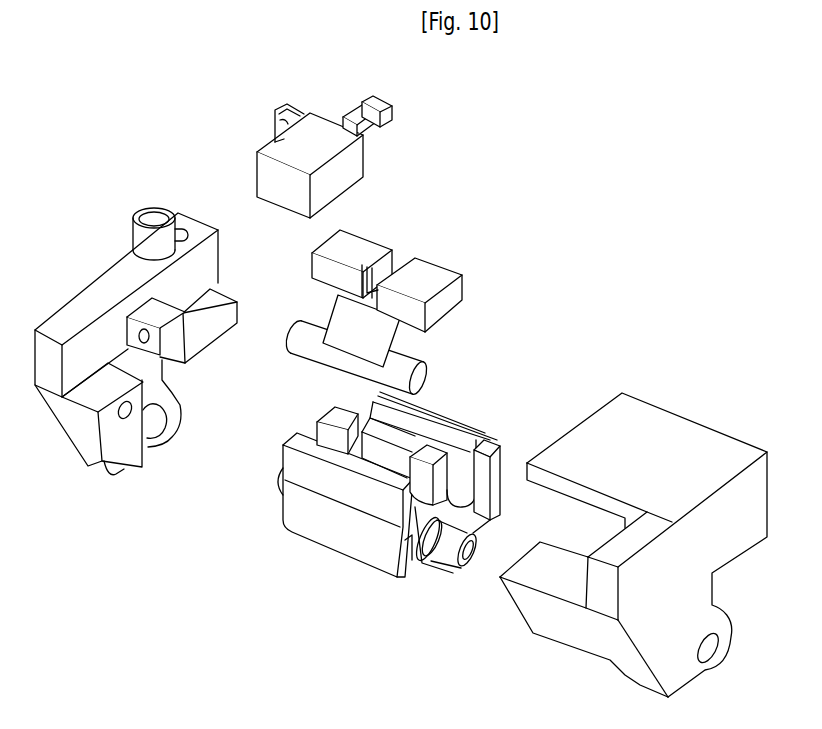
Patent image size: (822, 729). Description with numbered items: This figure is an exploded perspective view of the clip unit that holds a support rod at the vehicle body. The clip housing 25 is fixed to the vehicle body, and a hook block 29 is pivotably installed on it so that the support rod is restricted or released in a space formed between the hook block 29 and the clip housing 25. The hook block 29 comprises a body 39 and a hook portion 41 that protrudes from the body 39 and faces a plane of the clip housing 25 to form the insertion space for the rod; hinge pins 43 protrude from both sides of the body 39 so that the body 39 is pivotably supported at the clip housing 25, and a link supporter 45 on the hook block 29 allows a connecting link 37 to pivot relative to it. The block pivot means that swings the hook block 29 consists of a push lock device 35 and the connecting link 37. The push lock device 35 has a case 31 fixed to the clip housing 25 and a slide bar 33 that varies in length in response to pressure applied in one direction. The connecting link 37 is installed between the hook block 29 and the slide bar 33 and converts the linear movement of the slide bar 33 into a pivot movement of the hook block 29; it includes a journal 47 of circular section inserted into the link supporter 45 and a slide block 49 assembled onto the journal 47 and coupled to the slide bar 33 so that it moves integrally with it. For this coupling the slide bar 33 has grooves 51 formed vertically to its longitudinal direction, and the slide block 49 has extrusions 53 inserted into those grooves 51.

The clip housing 25 is at (90, 302).
The hook block 29 is at (333, 543).
The case 31 is at (345, 185).
The slide bar 33 is at (352, 110).
The push lock device 35 is at (271, 142).
The connecting link 37 is at (470, 315).
The body 39 is at (421, 572).
The hook portion 41 is at (476, 484).
The hinge pins 43 is at (475, 555).
The link supporter 45 is at (327, 433).
The journal 47 is at (308, 320).
The slide block 49 is at (312, 250).
The grooves 51 is at (388, 125).
The extrusions 53 is at (375, 268).